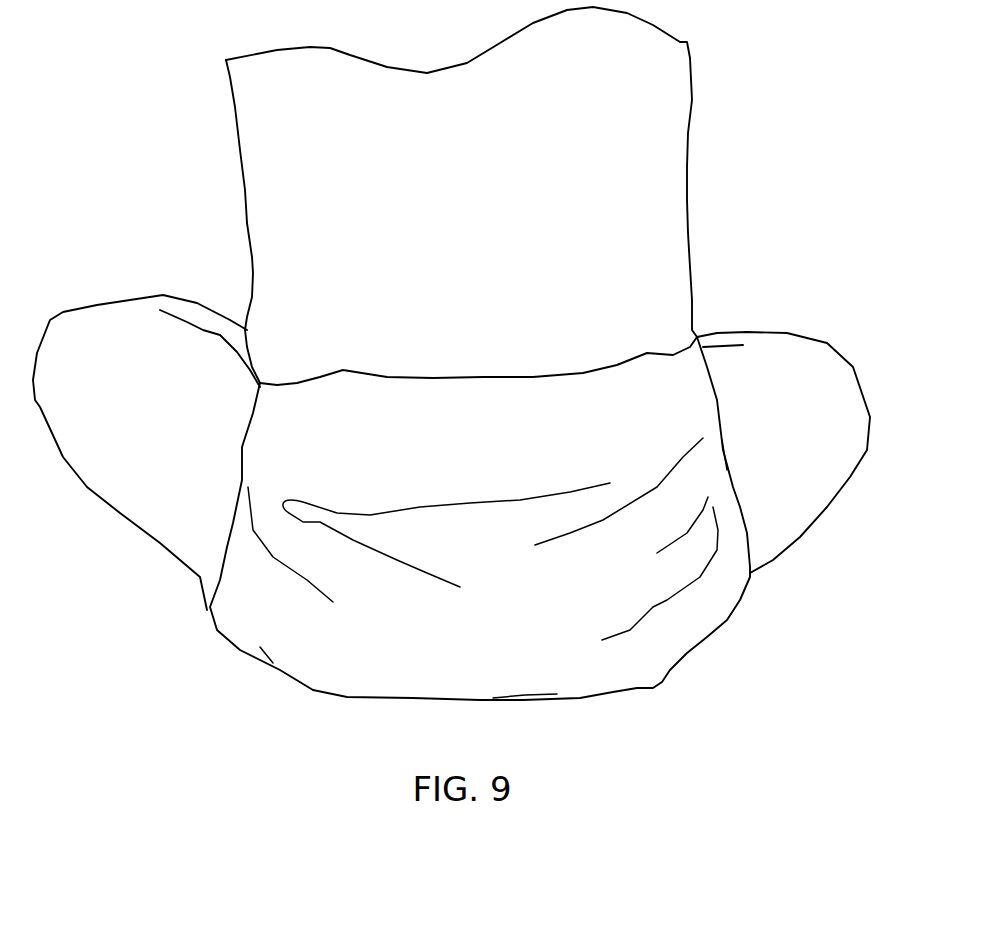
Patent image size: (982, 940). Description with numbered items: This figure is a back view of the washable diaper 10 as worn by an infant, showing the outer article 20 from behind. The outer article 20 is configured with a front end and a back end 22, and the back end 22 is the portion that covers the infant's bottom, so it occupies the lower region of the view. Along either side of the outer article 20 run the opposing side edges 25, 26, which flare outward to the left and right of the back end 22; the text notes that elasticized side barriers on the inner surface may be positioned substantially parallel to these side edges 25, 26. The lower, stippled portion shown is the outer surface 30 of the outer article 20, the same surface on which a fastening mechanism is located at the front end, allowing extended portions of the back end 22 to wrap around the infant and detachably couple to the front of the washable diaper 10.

The washable diaper 10 is at (713, 693).
The outer article 20 is at (533, 425).
The back end 22 is at (437, 377).
The side edge 25 is at (242, 475).
The side edge 26 is at (740, 505).
The outer surface 30 is at (357, 647).